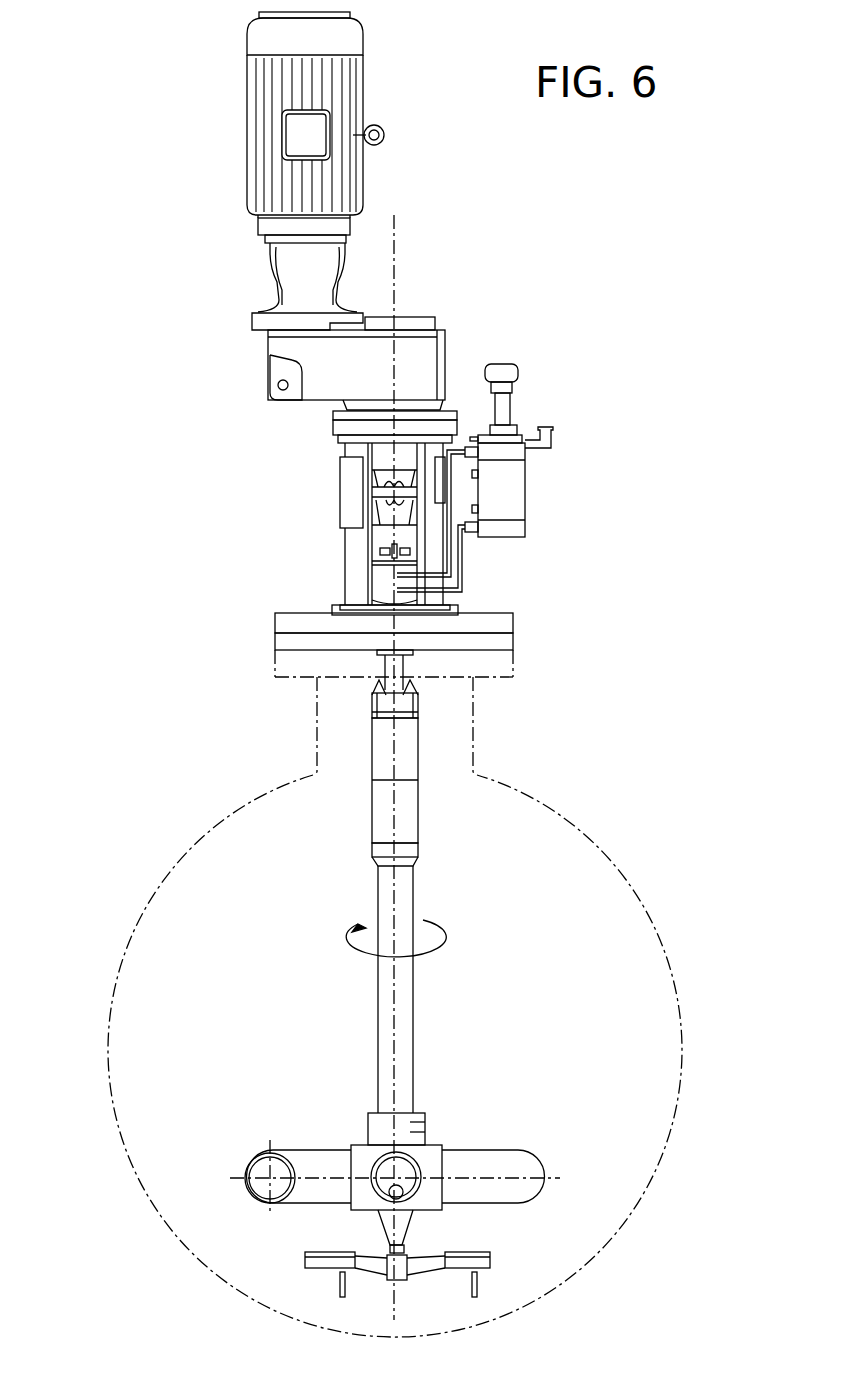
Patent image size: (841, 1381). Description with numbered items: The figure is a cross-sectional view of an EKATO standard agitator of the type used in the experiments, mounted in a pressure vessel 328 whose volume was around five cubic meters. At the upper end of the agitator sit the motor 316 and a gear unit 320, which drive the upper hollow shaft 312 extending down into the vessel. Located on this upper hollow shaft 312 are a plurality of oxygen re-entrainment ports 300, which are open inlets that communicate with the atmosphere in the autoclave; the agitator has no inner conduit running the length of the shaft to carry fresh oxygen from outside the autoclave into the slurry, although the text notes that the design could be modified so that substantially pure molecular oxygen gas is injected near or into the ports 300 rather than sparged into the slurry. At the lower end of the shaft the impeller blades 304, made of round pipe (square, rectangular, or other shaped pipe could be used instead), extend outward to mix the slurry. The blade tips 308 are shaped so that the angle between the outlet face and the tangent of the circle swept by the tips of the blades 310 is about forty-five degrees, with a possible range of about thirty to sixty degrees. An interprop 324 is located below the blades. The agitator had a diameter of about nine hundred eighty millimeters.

The oxygen re-entrainment ports 300 is at (395, 713).
The impeller blades 304 is at (305, 1152).
The blade tips 308 is at (247, 1178).
The tips of the blades 310 is at (545, 1172).
The upper (hollow) shaft 312 is at (378, 1020).
The motor 316 is at (363, 172).
The gear unit 320 is at (447, 332).
The interprop 324 is at (305, 1258).
The pressure vessel 328 is at (663, 948).